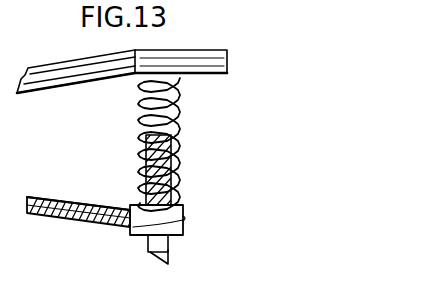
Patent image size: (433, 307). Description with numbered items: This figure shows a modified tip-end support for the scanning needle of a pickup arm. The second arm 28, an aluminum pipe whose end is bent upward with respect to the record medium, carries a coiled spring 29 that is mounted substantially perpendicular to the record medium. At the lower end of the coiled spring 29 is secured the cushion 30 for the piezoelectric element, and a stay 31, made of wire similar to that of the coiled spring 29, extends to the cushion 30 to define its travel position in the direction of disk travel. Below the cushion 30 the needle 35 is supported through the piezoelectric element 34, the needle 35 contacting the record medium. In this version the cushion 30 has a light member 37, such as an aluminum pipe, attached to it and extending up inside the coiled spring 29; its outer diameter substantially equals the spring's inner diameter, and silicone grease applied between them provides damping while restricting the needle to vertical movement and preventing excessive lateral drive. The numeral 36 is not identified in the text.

The second arm 28 is at (185, 60).
The coiled spring 29 is at (181, 89).
The cushion for the piezoelectric element 30 is at (183, 207).
The stay 31 is at (88, 223).
The piezoelectric element 34 is at (166, 243).
The needle 35 is at (168, 257).
The upper surface of rod 36 is at (90, 204).
The light member 37 is at (180, 156).